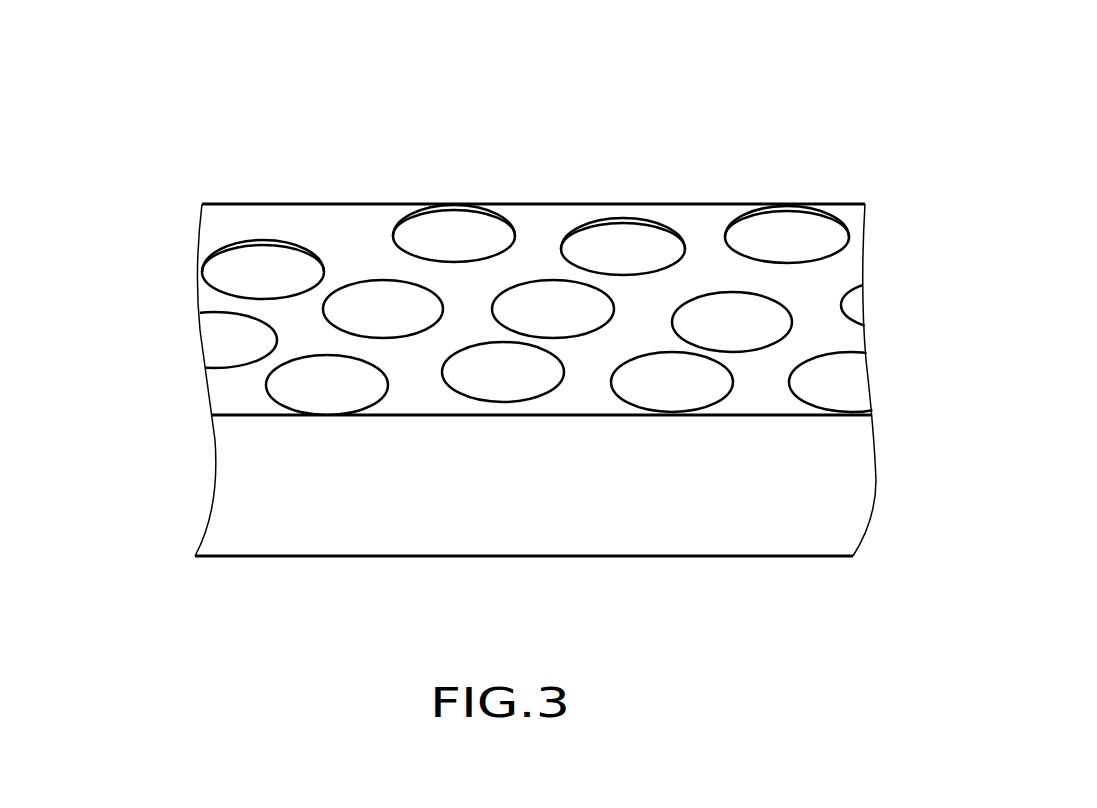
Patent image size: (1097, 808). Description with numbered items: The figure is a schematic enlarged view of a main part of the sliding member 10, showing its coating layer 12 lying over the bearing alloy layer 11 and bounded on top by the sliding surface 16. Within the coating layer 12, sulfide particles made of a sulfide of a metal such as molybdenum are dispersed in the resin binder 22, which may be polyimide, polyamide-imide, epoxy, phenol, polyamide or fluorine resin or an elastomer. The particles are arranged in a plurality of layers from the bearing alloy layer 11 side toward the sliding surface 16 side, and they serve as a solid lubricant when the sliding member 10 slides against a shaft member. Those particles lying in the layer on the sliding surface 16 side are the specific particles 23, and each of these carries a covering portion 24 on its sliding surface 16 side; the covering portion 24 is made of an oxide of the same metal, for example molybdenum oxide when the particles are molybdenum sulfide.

The sliding member 10 is at (847, 117).
The bearing alloy layer 11 is at (230, 444).
The coating layer 12 is at (185, 322).
The sliding surface 16 is at (223, 203).
The resin binder 22 is at (850, 266).
The specific particles 23 is at (240, 270).
The covering portion 24 is at (268, 270).